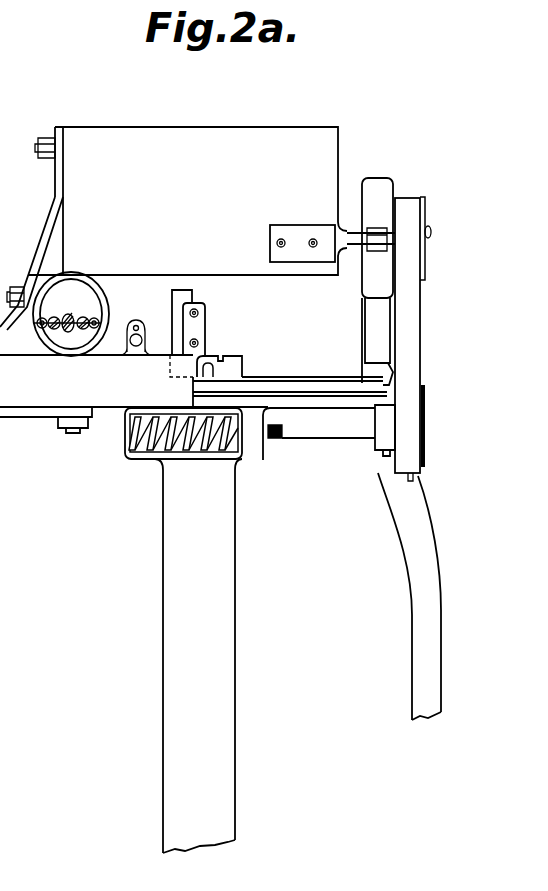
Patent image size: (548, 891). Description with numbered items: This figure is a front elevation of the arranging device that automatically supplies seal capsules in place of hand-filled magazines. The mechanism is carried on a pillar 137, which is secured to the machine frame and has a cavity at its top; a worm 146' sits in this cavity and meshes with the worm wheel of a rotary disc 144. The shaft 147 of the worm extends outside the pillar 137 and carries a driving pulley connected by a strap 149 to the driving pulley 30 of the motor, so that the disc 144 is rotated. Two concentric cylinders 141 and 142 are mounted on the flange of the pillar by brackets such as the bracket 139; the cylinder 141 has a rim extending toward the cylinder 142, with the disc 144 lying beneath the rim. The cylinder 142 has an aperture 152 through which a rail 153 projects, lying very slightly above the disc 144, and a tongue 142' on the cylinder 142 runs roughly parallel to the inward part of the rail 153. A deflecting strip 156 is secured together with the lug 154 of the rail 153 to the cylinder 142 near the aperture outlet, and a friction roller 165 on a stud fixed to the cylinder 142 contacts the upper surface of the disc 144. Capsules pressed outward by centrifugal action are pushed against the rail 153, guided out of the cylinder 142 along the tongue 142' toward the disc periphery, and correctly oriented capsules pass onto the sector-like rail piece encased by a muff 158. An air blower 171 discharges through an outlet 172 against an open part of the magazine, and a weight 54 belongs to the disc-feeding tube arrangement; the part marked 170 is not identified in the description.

The cylinder 141 is at (180, 142).
The cylinder 142 is at (332, 213).
The tongue 142' is at (288, 377).
The air blower 171 is at (385, 183).
The driving pulley 30 is at (423, 205).
The bracket 139 is at (45, 236).
The friction roller 165 is at (78, 293).
The deflecting strip 156 is at (173, 297).
The lug 154 is at (205, 306).
The aperture 152 is at (213, 355).
The rail 153 is at (222, 363).
The outlet 172 is at (388, 368).
The strap 149 is at (413, 415).
The shaft 147 is at (330, 430).
The rotary disc 144 is at (273, 387).
The worm 146' is at (134, 453).
The muff 158 is at (27, 398).
The pillar 137 is at (218, 577).
The curved arm 170 is at (423, 608).
The weight 54 is at (12, 616).